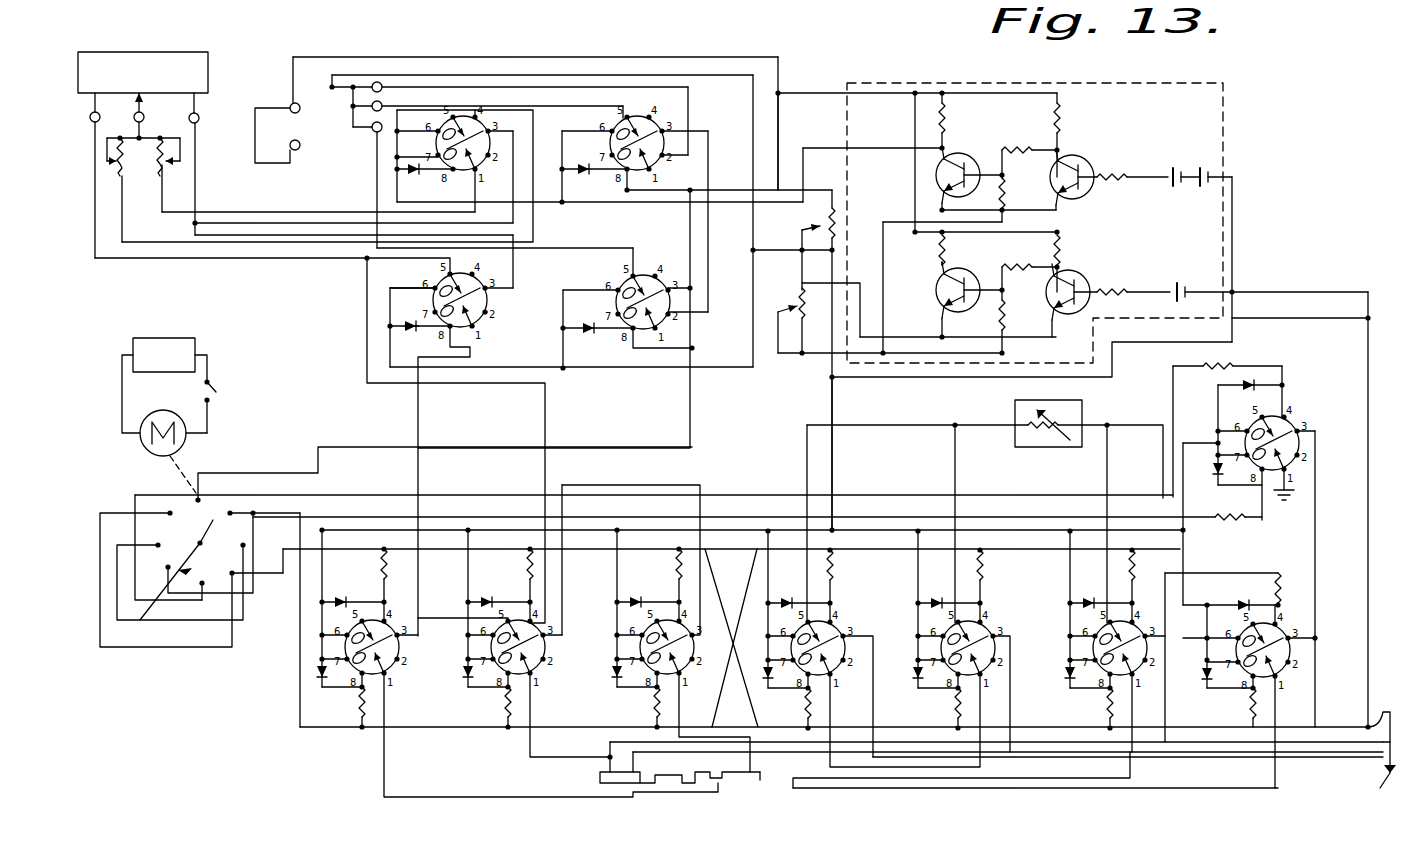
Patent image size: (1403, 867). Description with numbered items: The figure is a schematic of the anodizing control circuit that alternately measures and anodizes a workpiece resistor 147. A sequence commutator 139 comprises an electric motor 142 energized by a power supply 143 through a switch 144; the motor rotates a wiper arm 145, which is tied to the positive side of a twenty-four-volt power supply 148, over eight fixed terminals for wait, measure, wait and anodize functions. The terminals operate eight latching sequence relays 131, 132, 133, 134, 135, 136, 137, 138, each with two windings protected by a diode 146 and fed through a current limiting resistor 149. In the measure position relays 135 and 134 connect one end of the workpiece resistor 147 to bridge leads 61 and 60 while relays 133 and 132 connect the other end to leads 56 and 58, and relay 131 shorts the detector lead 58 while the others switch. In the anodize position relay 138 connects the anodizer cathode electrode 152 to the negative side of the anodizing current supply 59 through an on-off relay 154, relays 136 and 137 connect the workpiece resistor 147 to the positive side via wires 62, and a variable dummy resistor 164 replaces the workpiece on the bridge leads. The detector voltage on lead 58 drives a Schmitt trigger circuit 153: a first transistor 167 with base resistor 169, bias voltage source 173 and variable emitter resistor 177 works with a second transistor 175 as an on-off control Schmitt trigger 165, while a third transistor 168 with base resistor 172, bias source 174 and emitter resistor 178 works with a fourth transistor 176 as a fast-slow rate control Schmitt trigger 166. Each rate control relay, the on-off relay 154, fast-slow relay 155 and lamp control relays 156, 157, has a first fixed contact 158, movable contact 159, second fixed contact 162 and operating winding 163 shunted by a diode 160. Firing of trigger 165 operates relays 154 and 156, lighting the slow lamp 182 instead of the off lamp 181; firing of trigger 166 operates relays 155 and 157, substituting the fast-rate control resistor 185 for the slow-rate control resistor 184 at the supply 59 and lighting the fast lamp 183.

The anodizing current supply 59 is at (158, 40).
The wires 62 is at (96, 105).
The slow-rate control resistor 184 is at (129, 190).
The fast-rate control resistor 185 is at (165, 165).
The 24-volt power supply 148 is at (320, 148).
The fast lamp 183 is at (380, 82).
The slow lamp 182 is at (382, 103).
The off lamp 181 is at (481, 199).
The fast-slow relay 155 is at (452, 122).
The lamp control relay 157 is at (670, 112).
The on-off relay 154 is at (486, 275).
The lamp control relay 156 is at (651, 274).
The second fixed contact 162 is at (450, 276).
The operating winding 163 is at (437, 290).
The movable contact 159 is at (488, 306).
The first fixed contact 158 is at (478, 320).
The diode 160 is at (420, 328).
The Schmitt trigger circuit 153 is at (1228, 118).
The fourth transistor 176 is at (962, 158).
The second transistor 175 is at (962, 272).
The third transistor 168 is at (1088, 170).
The first transistor 167 is at (1072, 275).
The base resistor 172 is at (1132, 192).
The base resistor 169 is at (1133, 278).
The bias voltage source 174 is at (1222, 196).
The bias voltage source 173 is at (1180, 296).
The fast-slow rate control Schmitt trigger 166 is at (1100, 130).
The on-off control Schmitt trigger 165 is at (1110, 258).
The emitter resistor 178 is at (838, 232).
The variable emitter resistor 177 is at (888, 319).
The dummy resistor 164 is at (1082, 403).
The power supply 143 is at (188, 338).
The switch 144 is at (216, 392).
The electric motor 142 is at (188, 435).
The diode 146 is at (176, 466).
The sequence commutator 139 is at (160, 490).
The wiper arm 145 is at (1250, 675).
The sequence relay 138 is at (382, 675).
The sequence relay 137 is at (533, 675).
The sequence relay 136 is at (681, 676).
The sequence relay 135 is at (832, 676).
The sequence relay 134 is at (985, 680).
The sequence relay 133 is at (1136, 680).
The sequence relay 132 is at (1290, 655).
The sequence relay 131 is at (1287, 420).
The current limiting resistor 149 is at (1222, 517).
The workpiece resistor 147 is at (752, 786).
The anodizer cathode electrode 152 is at (700, 790).
The lead 58 is at (1383, 728).
The wire 56 is at (1325, 745).
The wire 60 is at (1380, 752).
The lead 61 is at (1352, 762).